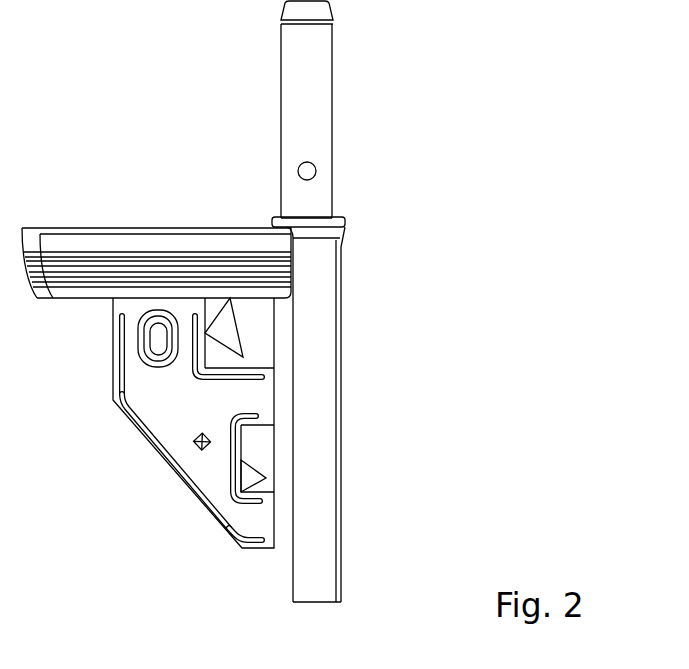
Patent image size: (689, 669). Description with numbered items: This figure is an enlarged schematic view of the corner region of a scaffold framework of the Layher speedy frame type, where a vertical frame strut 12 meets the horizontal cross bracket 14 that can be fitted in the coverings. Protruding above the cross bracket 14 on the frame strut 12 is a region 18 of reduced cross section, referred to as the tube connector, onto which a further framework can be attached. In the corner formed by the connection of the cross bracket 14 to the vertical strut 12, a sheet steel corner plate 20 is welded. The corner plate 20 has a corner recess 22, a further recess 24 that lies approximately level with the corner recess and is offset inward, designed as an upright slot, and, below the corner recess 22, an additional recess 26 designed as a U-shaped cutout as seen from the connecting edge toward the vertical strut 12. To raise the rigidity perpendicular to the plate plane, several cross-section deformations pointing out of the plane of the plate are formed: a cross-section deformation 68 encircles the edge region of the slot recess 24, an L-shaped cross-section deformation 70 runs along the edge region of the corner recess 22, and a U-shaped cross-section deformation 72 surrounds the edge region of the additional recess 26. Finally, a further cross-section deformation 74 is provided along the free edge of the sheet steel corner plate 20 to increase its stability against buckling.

The vertical frame strut 12 is at (348, 409).
The cross bracket 14 is at (156, 219).
The tube connector region 18 is at (351, 109).
The sheet steel corner plate 20 is at (158, 423).
The corner recess 22 is at (206, 249).
The recess 24 is at (158, 339).
The additional recess 26 is at (197, 556).
The cross-section deformation 68 is at (79, 355).
The cross-section deformation 70 is at (149, 376).
The cross-section deformation 72 is at (158, 489).
The cross-section deformation 74 is at (134, 461).